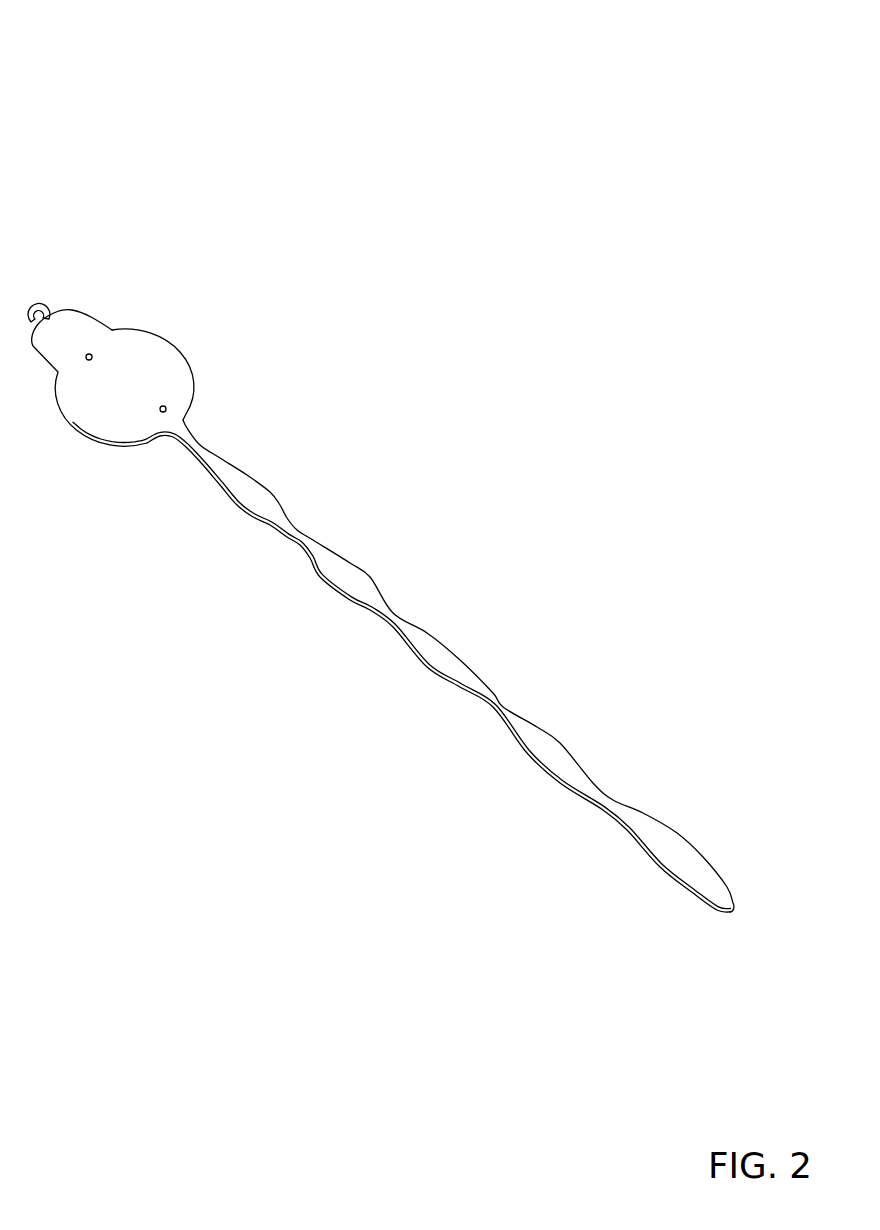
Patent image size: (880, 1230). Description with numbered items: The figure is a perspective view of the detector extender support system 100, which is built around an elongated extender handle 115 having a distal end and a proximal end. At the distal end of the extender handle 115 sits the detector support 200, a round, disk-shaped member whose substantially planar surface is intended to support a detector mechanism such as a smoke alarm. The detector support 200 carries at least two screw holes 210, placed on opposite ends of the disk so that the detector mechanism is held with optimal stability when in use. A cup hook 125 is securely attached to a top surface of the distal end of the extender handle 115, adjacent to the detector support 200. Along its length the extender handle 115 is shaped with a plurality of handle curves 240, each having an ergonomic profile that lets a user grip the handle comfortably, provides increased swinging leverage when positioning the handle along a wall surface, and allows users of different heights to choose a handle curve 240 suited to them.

The detector extender support system 100 is at (583, 92).
The detector support 200 is at (137, 395).
The cup hook 125 is at (44, 300).
The screw holes 210 is at (89, 350).
The extender handle 115 is at (446, 660).
The handle curves 240 is at (566, 737).